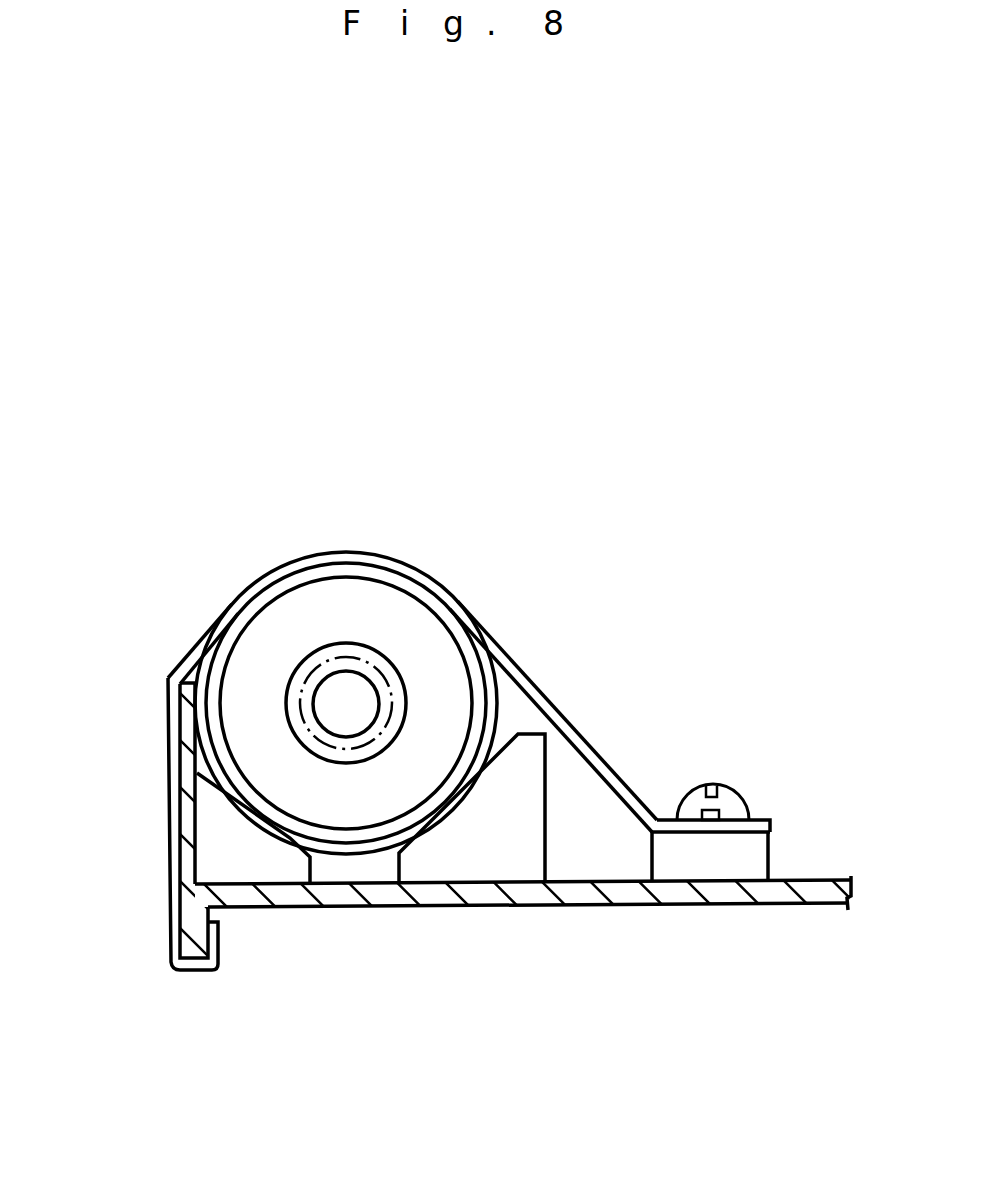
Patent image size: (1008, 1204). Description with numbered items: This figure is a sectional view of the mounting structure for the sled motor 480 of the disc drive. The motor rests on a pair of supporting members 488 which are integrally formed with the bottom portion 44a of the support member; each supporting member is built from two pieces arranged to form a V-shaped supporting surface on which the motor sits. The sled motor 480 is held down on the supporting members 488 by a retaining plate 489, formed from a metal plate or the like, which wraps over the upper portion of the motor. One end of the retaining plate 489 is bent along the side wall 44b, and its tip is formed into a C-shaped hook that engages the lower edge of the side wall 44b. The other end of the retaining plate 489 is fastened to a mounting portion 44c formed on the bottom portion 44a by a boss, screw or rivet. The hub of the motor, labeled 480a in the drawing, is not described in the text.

The sled motor 480 is at (428, 630).
The pulley hub 480a is at (370, 647).
The retaining plate 489 is at (573, 733).
The supporting members 488 is at (218, 813).
The bottom portion 44a is at (362, 902).
The wall portion 44b is at (187, 861).
The mounting portion 44c is at (757, 857).